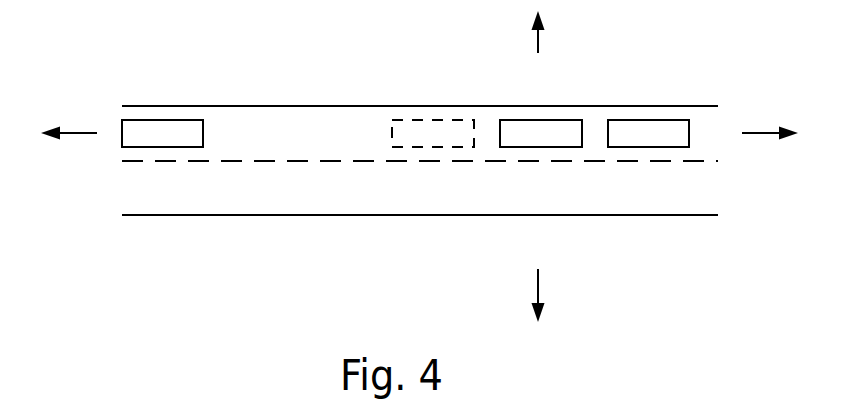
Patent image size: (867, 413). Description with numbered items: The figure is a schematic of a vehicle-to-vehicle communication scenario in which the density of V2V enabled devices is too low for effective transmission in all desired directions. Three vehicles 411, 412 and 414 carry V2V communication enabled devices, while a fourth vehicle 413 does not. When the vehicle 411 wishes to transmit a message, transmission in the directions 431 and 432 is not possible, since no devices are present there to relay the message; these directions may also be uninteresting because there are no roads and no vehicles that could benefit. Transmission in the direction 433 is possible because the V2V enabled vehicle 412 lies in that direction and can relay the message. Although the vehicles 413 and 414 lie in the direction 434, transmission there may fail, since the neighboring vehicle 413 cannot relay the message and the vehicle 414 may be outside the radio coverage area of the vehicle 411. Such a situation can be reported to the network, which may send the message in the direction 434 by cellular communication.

The vehicle 411 is at (541, 133).
The vehicle 412 is at (648, 133).
The vehicle 413 is at (433, 133).
The vehicle 414 is at (162, 133).
The direction 431 is at (537, 43).
The direction 432 is at (537, 284).
The direction 433 is at (763, 125).
The direction 434 is at (76, 125).